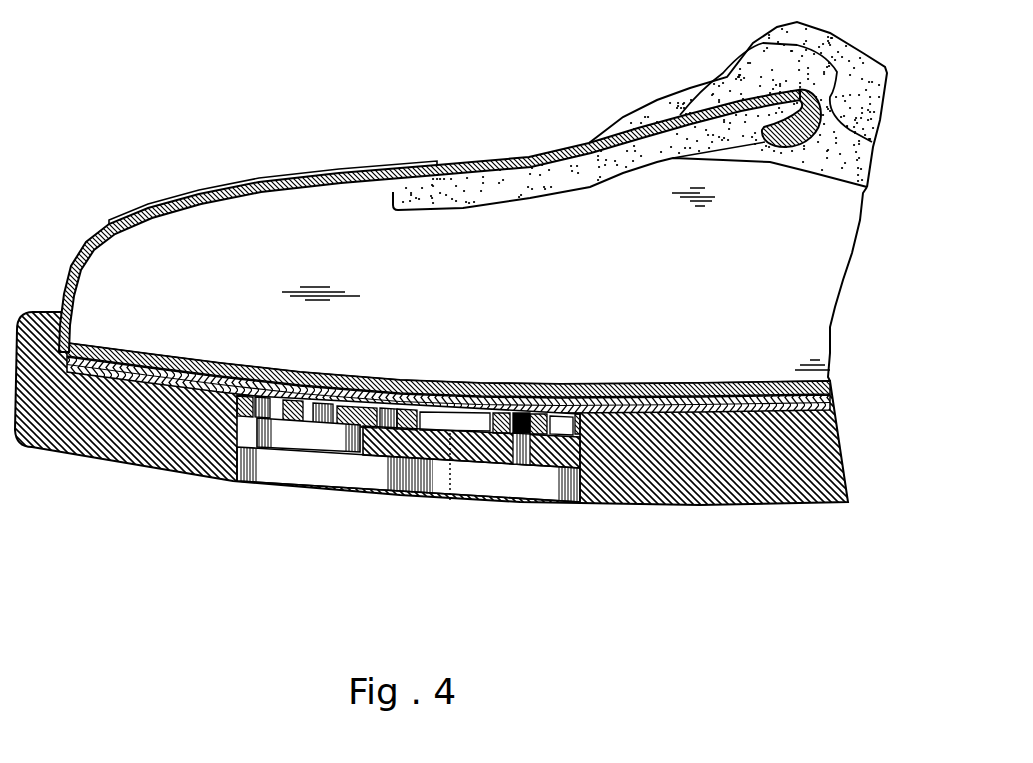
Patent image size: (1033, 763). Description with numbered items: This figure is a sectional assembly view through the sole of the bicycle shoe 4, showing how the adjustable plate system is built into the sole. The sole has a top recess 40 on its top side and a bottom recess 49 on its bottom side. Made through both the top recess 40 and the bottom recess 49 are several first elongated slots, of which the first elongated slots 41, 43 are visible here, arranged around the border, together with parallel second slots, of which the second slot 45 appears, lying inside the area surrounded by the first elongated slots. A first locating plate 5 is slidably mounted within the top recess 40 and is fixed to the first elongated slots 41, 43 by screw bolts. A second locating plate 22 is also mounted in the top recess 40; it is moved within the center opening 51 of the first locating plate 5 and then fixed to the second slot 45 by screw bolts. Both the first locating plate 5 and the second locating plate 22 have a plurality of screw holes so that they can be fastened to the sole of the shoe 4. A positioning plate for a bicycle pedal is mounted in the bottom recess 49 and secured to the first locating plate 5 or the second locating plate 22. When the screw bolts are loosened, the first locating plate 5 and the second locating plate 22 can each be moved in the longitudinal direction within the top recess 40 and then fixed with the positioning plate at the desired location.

The bicycle shoe 4 is at (622, 114).
The first locating plate 5 is at (250, 377).
The second locating plate 22 is at (410, 387).
The top recess 40 is at (577, 383).
The first elongated slot 41 is at (290, 440).
The first elongated slot 43 is at (523, 463).
The second slot 45 is at (450, 500).
The bottom recess 49 is at (238, 481).
The center opening 51 is at (492, 387).